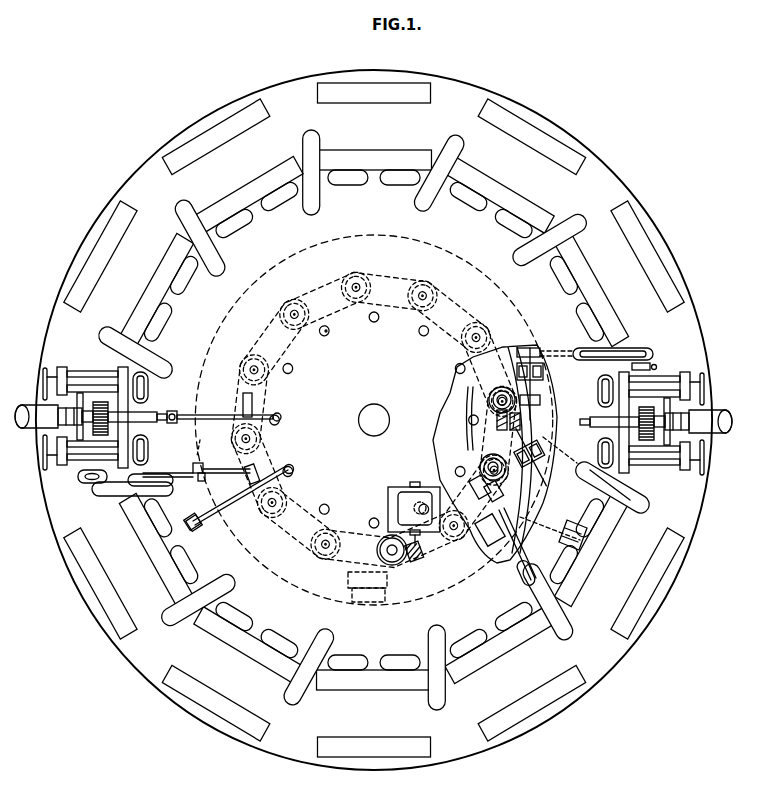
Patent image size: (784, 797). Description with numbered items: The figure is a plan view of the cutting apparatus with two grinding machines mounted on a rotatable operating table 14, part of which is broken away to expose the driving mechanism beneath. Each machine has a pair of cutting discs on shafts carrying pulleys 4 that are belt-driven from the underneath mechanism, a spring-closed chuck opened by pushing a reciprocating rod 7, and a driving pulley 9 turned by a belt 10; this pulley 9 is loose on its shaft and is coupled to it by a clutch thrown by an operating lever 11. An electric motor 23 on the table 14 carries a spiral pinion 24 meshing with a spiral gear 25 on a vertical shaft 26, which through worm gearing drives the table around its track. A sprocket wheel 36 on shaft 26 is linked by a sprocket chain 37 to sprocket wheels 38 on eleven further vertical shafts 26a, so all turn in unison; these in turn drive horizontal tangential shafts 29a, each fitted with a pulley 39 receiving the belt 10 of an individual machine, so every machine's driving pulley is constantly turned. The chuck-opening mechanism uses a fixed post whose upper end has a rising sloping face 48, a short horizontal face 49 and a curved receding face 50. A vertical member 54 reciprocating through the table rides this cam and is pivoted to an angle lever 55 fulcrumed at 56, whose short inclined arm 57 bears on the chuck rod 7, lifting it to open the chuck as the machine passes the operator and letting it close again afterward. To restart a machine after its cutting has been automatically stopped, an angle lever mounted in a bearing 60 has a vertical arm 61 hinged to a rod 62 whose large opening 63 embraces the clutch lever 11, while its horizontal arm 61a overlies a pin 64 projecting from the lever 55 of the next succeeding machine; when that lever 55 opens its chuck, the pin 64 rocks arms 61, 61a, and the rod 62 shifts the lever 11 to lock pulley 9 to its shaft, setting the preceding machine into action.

The pulleys 4 is at (148, 388).
The reciprocating rod 7 is at (150, 412).
The driving pulley 9 is at (112, 496).
The belt 10 is at (590, 349).
The operating lever 11 is at (100, 492).
The table 14 is at (373, 420).
The electric motor 23 is at (405, 497).
The spiral pinion 24 is at (430, 557).
The spiral gear 25 is at (400, 566).
The vertical shaft 26 is at (389, 540).
The vertical shafts 26a is at (373, 408).
The horizontal tangential shafts 29a is at (545, 373).
The sprocket wheel 36 is at (374, 435).
The sprocket chain 37 is at (495, 454).
The sprocket wheels 38 is at (325, 335).
The pulley 39 is at (528, 530).
The sloping face 48 is at (470, 392).
The horizontal face 49 is at (470, 421).
The curved receding face 50 is at (470, 430).
The vertical member 54 is at (295, 468).
The angle lever 55 is at (222, 414).
The fulcrum 56 is at (174, 413).
The short inclined arm 57 is at (190, 527).
The bearing 60 is at (209, 446).
The vertical arm 61 is at (200, 478).
The horizontal arm 61a is at (205, 468).
The rod 62 is at (193, 467).
The large opening 63 is at (86, 478).
The pin 64 is at (252, 397).